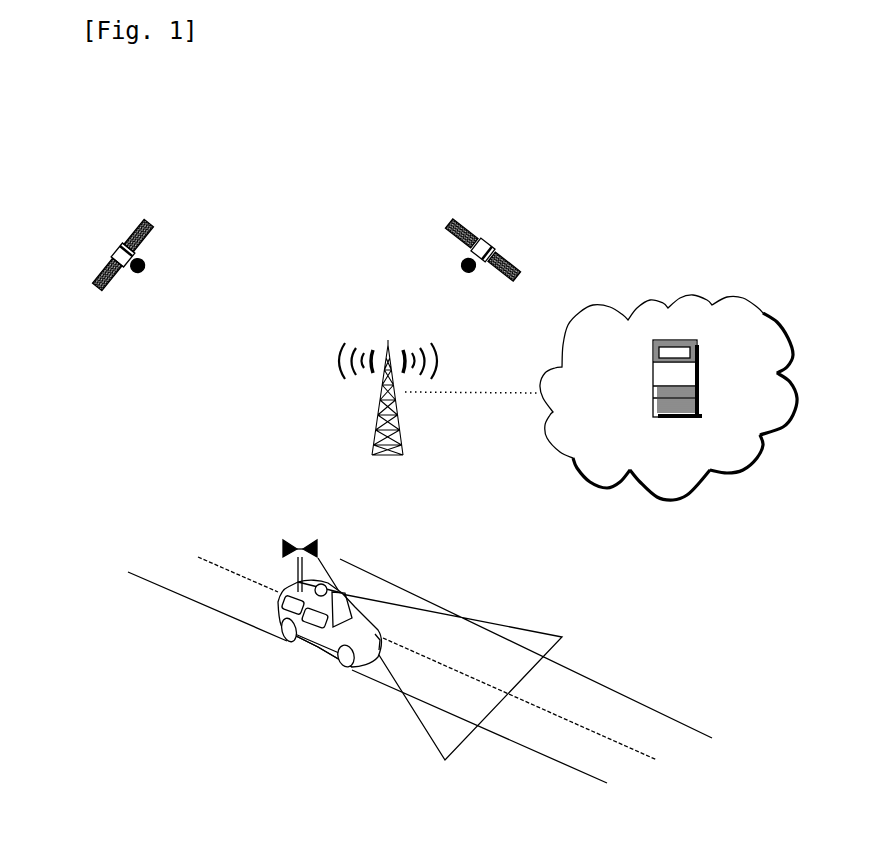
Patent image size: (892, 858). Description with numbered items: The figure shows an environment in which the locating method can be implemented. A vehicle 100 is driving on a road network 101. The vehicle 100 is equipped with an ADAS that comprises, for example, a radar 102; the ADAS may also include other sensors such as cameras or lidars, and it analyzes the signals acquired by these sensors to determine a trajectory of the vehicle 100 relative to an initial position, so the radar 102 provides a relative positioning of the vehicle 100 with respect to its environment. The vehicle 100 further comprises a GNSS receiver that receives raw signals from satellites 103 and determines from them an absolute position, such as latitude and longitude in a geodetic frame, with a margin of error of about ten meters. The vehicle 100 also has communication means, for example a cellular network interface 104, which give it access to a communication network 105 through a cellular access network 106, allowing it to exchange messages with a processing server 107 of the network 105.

The vehicle 100 is at (305, 650).
The road network 101 is at (220, 587).
The radar 102 is at (340, 559).
The satellites 103 is at (157, 228).
The cellular network interface 104 is at (298, 570).
The communication network 105 is at (568, 435).
The cellular access network 106 is at (378, 418).
The processing server 107 is at (652, 372).